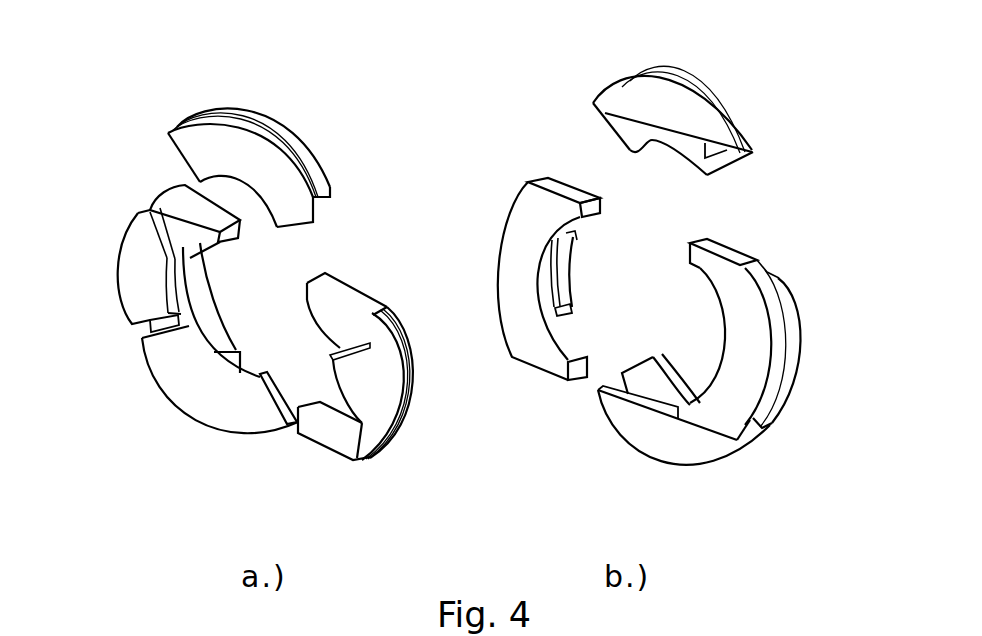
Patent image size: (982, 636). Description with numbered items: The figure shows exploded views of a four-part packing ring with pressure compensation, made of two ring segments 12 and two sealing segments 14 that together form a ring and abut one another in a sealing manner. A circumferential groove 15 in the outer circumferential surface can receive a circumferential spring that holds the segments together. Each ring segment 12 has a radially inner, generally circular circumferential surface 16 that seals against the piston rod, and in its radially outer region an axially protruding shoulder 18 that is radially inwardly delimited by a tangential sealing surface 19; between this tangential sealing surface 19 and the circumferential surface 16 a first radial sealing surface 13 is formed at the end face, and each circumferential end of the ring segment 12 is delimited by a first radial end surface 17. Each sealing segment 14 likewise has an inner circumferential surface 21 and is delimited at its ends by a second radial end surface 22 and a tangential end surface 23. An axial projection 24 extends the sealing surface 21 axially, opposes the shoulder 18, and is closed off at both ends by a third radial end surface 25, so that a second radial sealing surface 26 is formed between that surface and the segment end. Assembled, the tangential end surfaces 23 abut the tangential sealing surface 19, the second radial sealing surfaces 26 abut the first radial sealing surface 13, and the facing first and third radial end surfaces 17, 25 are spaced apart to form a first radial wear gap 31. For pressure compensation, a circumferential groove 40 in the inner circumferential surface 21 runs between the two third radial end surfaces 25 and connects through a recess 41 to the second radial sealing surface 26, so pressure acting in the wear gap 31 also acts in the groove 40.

The ring segment 12 is at (238, 162).
The first radial sealing surface 13 is at (630, 132).
The sealing segment 14 is at (175, 222).
The circumferential groove 15 is at (290, 168).
The circumferential surface 16 is at (197, 350).
The first radial end surface 17 is at (273, 400).
The axially protruding shoulder 18 is at (682, 128).
The tangential sealing surface 19 is at (720, 153).
The circumferential surface 21 is at (220, 348).
The second radial end surface 22 is at (592, 210).
The tangential end surface 23 is at (185, 200).
The axial projection 24 is at (792, 328).
The third radial end surface 25 is at (153, 222).
The second radial sealing surface 26 is at (200, 237).
The first radial wear gap 31 is at (167, 323).
The circumferential groove 40 is at (173, 288).
The recess 41 is at (182, 315).